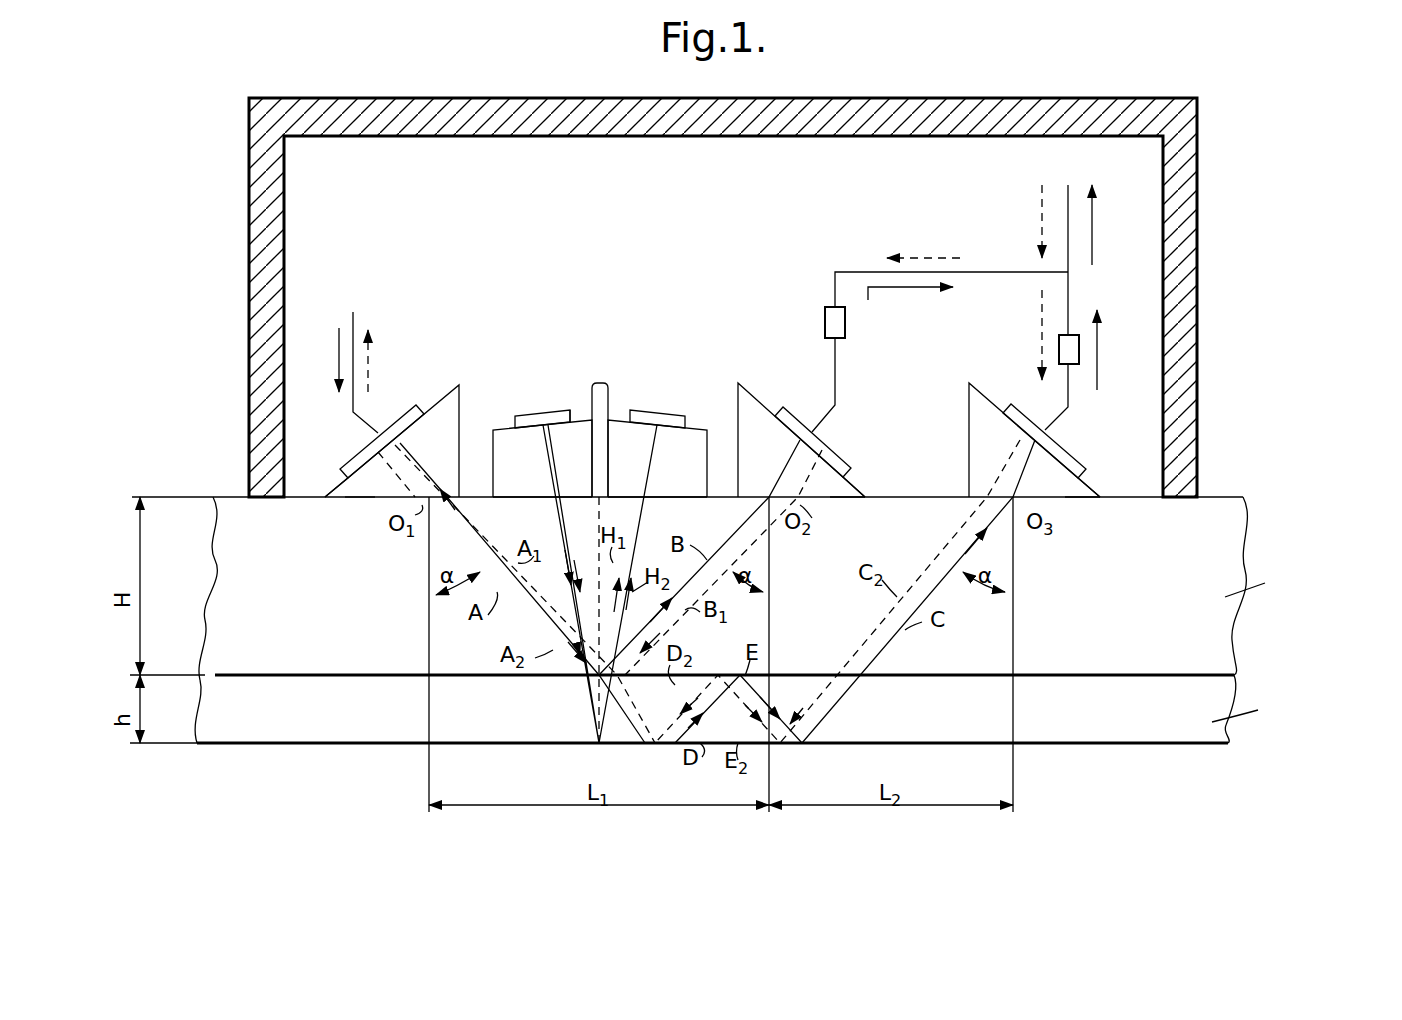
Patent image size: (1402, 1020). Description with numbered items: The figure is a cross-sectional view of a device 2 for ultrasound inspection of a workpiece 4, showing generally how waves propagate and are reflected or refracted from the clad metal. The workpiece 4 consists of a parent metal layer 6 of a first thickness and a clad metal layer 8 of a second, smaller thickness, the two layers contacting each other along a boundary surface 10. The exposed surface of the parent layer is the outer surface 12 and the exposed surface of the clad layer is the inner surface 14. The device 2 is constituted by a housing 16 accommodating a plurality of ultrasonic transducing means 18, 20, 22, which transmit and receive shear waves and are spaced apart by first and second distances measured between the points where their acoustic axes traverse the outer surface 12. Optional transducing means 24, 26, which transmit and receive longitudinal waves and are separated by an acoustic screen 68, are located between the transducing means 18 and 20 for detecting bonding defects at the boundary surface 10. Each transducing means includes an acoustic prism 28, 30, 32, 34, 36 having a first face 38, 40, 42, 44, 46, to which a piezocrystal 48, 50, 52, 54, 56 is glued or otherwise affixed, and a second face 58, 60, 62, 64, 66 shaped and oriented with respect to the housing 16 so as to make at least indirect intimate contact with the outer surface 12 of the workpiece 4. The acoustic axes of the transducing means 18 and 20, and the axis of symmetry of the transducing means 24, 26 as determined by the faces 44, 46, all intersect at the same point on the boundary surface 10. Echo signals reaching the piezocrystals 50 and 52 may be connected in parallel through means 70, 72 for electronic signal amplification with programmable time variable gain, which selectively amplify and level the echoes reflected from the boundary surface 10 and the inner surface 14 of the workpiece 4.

The device 2 is at (755, 248).
The workpiece 4 is at (723, 603).
The parent metal layer 6 is at (1112, 603).
The clad metal layer 8 is at (1112, 725).
The boundary surface 10 is at (1222, 672).
The outer surface 12 is at (1216, 496).
The inner surface 14 is at (1210, 747).
The housing 16 is at (1168, 333).
The transducing means 18 is at (402, 422).
The transducing means 20 is at (808, 433).
The transducing means 22 is at (1032, 446).
The transducing means 24 is at (529, 439).
The transducing means 26 is at (667, 443).
The acoustic prism 28 is at (461, 410).
The acoustic prism 30 is at (742, 397).
The acoustic prism 32 is at (972, 428).
The acoustic prism 34 is at (532, 462).
The acoustic prism 36 is at (694, 462).
The first face 38 is at (345, 476).
The first face 40 is at (853, 478).
The first face 42 is at (1095, 487).
The first face 44 is at (569, 414).
The first face 46 is at (615, 415).
The piezocrystal 48 is at (386, 424).
The piezocrystal 50 is at (797, 417).
The piezocrystal 52 is at (1028, 410).
The piezocrystal 54 is at (516, 414).
The piezocrystal 56 is at (688, 420).
The second face 58 is at (360, 500).
The second face 60 is at (848, 500).
The second face 62 is at (1078, 500).
The second face 64 is at (528, 500).
The second face 66 is at (670, 500).
The acoustic screen 68 is at (613, 407).
The means for electronic signal amplification 70 is at (824, 302).
The means for electronic signal amplification 72 is at (1076, 330).